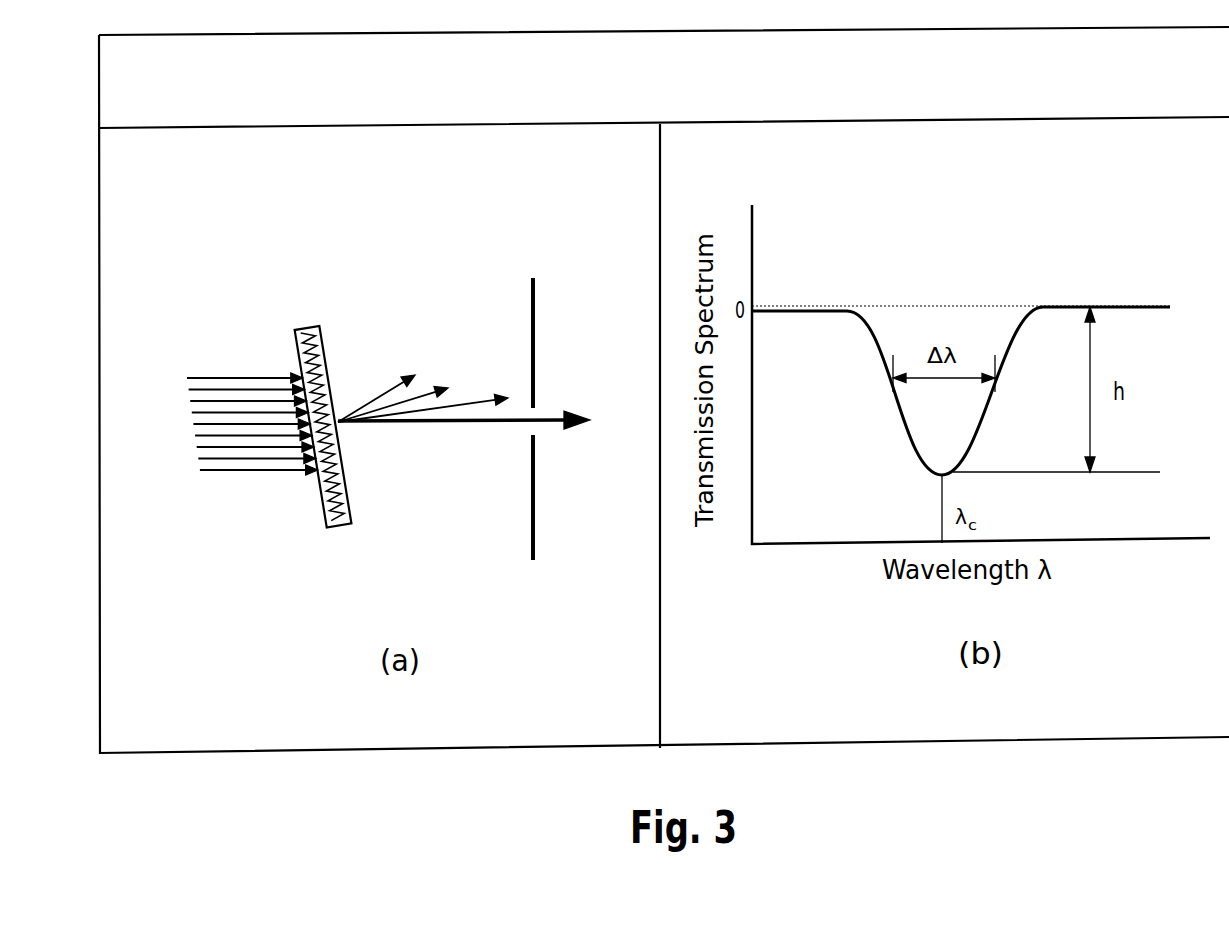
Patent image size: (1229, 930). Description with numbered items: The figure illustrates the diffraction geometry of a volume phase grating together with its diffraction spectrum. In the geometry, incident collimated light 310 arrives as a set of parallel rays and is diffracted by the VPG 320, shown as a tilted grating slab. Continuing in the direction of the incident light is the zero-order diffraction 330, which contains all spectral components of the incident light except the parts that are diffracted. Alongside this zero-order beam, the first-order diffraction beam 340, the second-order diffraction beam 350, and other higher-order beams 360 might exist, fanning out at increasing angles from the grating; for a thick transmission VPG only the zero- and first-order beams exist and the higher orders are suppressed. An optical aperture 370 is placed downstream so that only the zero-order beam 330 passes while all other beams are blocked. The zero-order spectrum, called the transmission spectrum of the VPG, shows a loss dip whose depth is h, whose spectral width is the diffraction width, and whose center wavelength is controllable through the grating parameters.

The incident collimated light 310 is at (252, 408).
The volume phase grating 320 is at (312, 328).
The zero-order diffraction 330 is at (558, 413).
The first-order diffraction beam 340 is at (474, 392).
The second-order diffraction beam 350 is at (439, 385).
The higher-order beams 360 is at (396, 382).
The optical aperture 370 is at (535, 505).